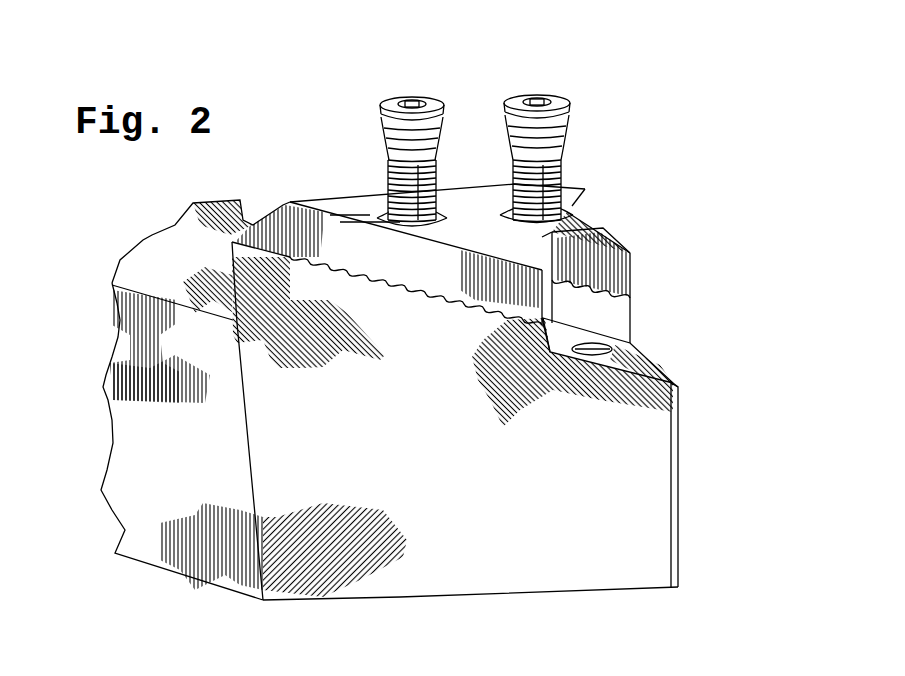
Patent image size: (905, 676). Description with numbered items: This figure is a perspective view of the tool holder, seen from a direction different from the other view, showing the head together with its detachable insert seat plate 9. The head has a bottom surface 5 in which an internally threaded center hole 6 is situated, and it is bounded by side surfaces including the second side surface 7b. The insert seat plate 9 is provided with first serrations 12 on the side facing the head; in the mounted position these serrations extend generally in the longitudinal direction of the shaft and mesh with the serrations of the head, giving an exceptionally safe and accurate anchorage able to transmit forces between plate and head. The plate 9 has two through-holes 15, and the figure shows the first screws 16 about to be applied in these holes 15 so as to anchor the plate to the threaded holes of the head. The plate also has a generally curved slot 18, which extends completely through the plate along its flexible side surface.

The bottom surface 5 is at (663, 368).
The center hole 6 is at (598, 348).
The second side surface 7b is at (630, 335).
The insert seat plate 9 is at (310, 192).
The first serrations 12 is at (477, 307).
The through-holes 15 is at (523, 255).
The first screws 16 is at (385, 107).
The slot 18 is at (560, 237).